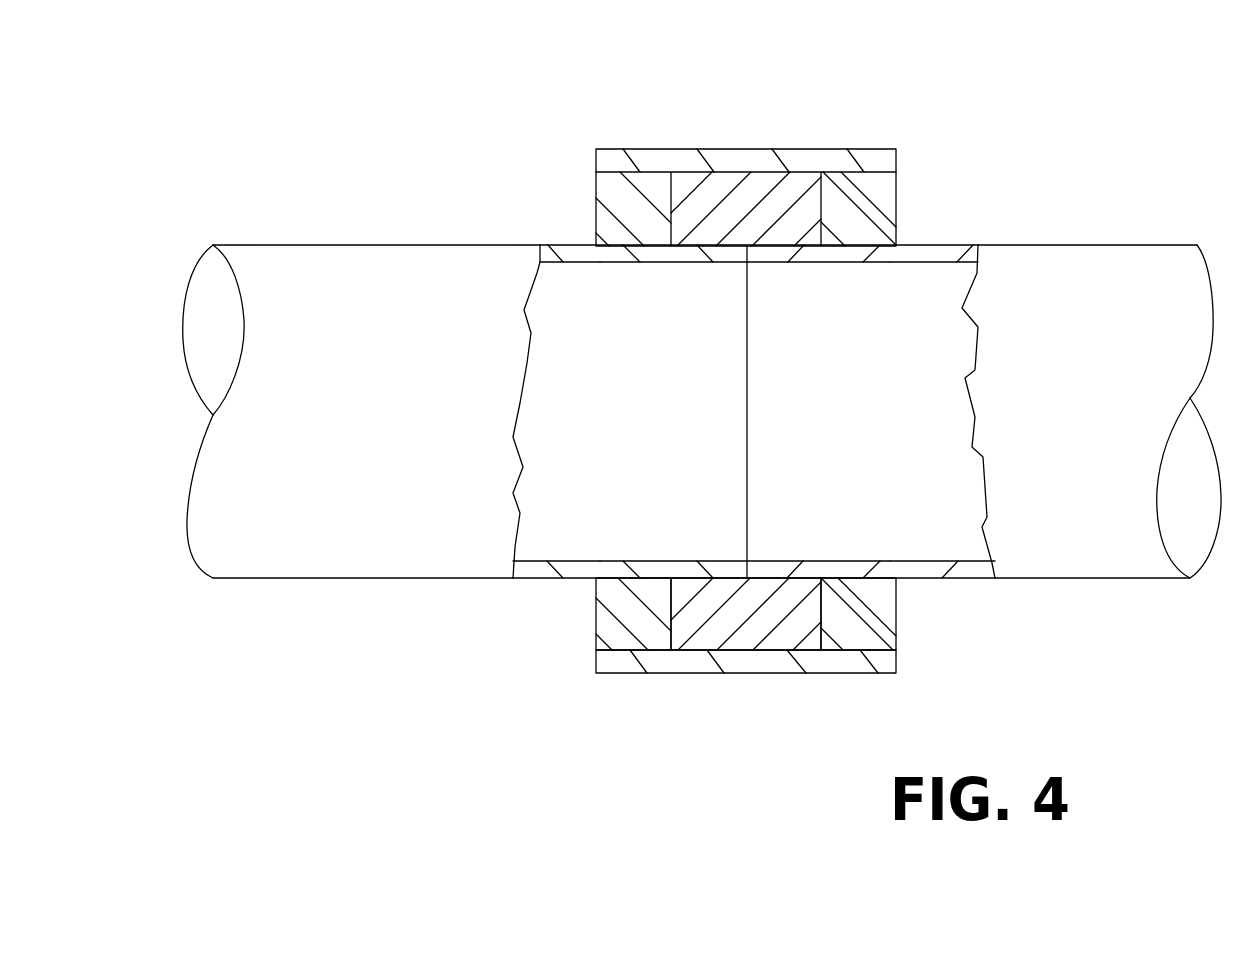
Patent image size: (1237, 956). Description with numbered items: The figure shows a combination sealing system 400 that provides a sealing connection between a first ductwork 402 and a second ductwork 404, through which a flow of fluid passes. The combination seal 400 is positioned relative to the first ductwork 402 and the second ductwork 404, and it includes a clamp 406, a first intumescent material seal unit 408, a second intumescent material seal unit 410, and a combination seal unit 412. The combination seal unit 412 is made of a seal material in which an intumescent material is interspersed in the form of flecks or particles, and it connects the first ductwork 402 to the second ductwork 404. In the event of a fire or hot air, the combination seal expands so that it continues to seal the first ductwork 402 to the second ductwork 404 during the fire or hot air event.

The combination sealing system 400 is at (958, 93).
The first ductwork 402 is at (1110, 337).
The second ductwork 404 is at (383, 350).
The clamp 406 is at (747, 149).
The first intumescent material seal unit 408 is at (873, 630).
The second intumescent material seal unit 410 is at (605, 622).
The combination seal unit 412 is at (752, 637).